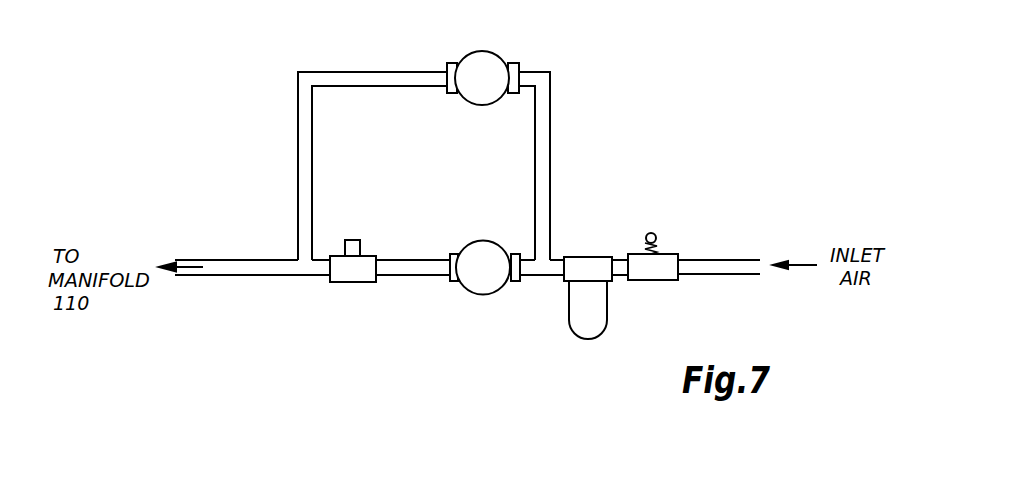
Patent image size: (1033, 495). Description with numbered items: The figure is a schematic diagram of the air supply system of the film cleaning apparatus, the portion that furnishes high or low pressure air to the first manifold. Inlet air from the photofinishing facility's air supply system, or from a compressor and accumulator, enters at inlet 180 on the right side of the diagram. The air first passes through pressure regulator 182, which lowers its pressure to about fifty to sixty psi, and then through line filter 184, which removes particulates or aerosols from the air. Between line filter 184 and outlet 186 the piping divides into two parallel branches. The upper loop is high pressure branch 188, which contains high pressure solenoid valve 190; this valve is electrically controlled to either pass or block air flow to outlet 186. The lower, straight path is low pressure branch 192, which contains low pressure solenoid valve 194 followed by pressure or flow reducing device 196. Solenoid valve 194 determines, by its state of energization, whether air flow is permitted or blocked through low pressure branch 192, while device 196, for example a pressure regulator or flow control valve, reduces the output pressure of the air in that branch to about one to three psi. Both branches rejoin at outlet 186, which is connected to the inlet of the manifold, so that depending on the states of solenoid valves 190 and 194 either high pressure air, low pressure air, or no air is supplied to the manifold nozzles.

The inlet 180 is at (725, 236).
The pressure regulator 182 is at (660, 282).
The line filter 184 is at (607, 330).
The outlet 186 is at (252, 297).
The high pressure branch 188 is at (466, 166).
The high pressure solenoid valve 190 is at (498, 70).
The low pressure branch 192 is at (502, 310).
The low pressure solenoid valve 194 is at (478, 295).
The pressure or flow reducing device 196 is at (346, 286).